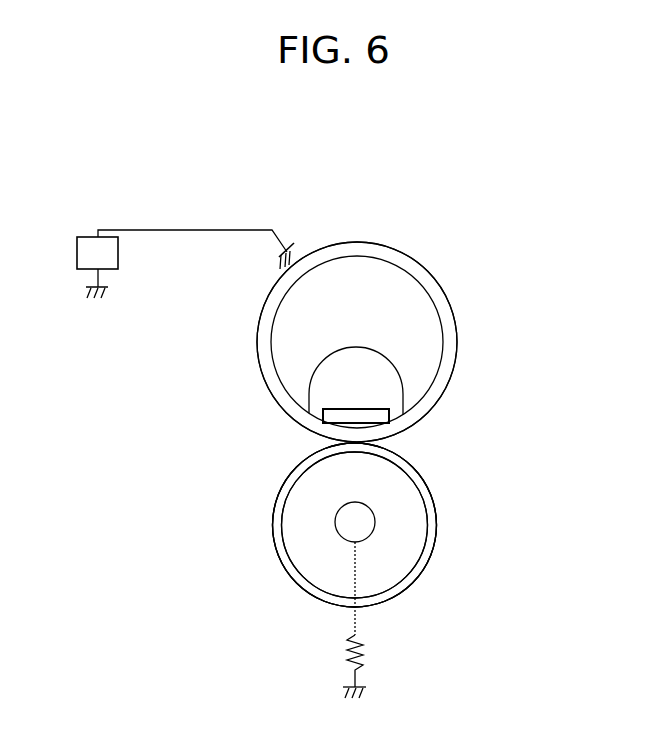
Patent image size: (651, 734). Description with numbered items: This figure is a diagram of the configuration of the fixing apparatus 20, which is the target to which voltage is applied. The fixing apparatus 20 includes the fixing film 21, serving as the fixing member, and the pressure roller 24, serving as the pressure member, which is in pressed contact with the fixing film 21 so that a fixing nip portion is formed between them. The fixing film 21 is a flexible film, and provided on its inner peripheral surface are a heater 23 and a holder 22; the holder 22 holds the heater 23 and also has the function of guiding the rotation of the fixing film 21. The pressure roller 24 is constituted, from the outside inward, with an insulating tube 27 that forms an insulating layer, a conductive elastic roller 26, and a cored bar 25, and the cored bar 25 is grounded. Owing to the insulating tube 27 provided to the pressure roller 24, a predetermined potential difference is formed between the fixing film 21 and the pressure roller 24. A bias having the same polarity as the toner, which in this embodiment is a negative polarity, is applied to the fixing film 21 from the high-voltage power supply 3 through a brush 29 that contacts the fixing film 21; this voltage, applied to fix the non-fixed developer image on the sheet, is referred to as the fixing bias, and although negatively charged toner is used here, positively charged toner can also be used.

The high-voltage power supply 3 is at (77, 252).
The fixing apparatus 20 is at (448, 437).
The fixing film 21 is at (443, 305).
The holder 22 is at (395, 367).
The heater 23 is at (338, 409).
The pressure roller 24 is at (437, 500).
The cored bar 25 is at (360, 533).
The conductive elastic roller 26 is at (407, 565).
The insulating tube 27 is at (435, 533).
The brush 29 is at (288, 250).